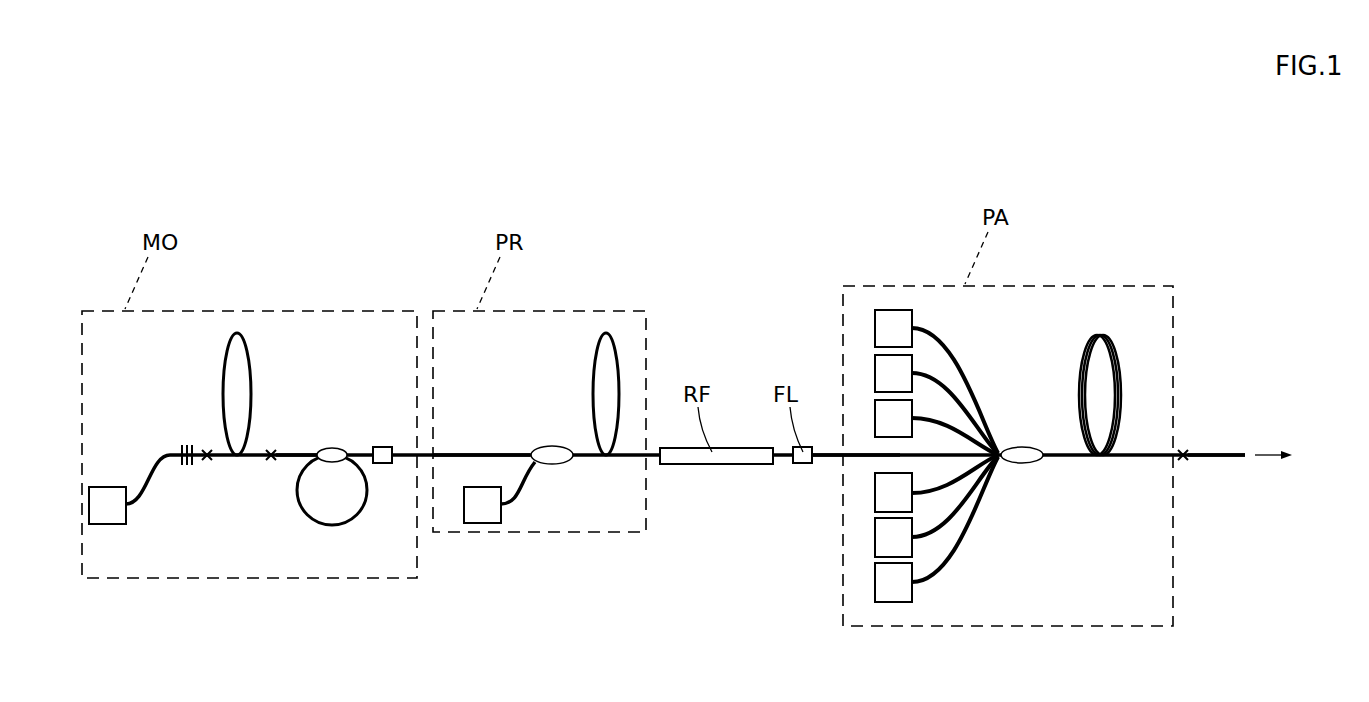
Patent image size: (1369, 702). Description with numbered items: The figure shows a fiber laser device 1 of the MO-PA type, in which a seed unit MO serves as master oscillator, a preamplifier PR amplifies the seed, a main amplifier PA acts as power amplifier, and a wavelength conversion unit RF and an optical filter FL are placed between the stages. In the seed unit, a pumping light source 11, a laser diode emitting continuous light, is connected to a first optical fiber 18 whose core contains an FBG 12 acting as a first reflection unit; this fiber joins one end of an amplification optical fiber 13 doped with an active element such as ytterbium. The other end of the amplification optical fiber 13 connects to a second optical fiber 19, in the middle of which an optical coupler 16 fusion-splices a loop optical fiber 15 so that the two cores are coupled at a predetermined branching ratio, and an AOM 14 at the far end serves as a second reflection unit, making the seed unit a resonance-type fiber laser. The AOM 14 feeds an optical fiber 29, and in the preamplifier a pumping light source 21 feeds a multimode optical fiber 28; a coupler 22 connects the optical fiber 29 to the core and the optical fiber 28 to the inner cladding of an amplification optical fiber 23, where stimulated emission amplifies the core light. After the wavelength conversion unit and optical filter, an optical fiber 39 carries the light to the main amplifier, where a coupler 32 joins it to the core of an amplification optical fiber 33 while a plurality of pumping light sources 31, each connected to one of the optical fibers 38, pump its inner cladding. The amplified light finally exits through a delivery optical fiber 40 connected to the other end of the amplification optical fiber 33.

The fiber laser device 1 is at (1207, 196).
The pumping light source 11 is at (103, 518).
The FBG 12 is at (185, 444).
The amplification optical fiber 13 is at (219, 451).
The AOM 14 is at (382, 446).
The loop optical fiber 15 is at (350, 518).
The optical coupler 16 is at (330, 446).
The first optical fiber 18 is at (158, 461).
The second optical fiber 19 is at (295, 451).
The pumping light source 21 is at (480, 518).
The coupler 22 is at (549, 448).
The amplification optical fiber 23 is at (588, 452).
The optical fiber 28 is at (523, 488).
The optical fiber 29 is at (476, 452).
The pumping light sources 31 is at (878, 330).
The coupler 32 is at (1028, 463).
The amplification optical fiber 33 is at (1070, 453).
The optical fibers 38 is at (964, 395).
The optical fiber 39 is at (850, 460).
The optical fiber 40 is at (1208, 453).